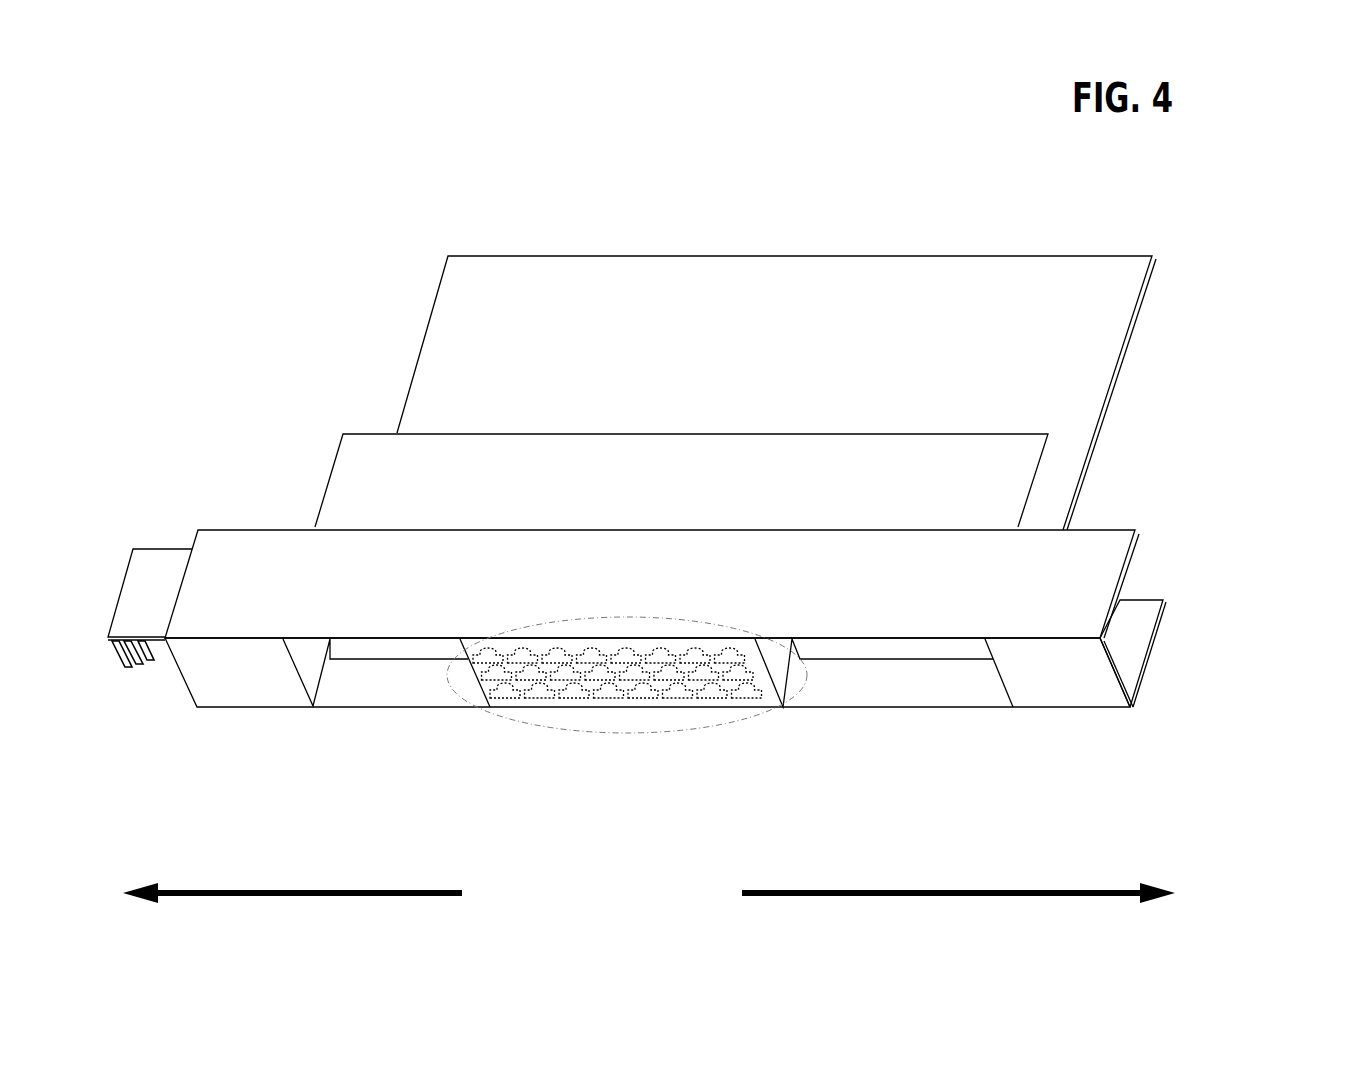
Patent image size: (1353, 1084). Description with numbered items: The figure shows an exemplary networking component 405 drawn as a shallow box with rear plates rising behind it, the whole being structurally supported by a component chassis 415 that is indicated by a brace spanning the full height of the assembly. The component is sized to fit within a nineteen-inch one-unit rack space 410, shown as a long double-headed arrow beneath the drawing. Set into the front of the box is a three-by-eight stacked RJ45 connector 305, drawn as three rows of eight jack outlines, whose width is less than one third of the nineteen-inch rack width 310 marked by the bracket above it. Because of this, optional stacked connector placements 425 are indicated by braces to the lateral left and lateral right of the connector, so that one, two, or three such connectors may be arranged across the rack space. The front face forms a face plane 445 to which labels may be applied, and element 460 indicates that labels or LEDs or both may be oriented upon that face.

The networking component 405 is at (348, 217).
The component chassis 415 is at (1157, 702).
The face plane 445 is at (232, 670).
The optional 3×8 stacked RJ45 connector placement 425 is at (1120, 713).
The 3×8 stacked RJ45 connector 305 is at (630, 738).
The 19-inch rack width 310 is at (770, 630).
The labels or LEDs oriented upon the face 460 is at (1078, 676).
The 19-inch 1U rack space 410 is at (649, 892).